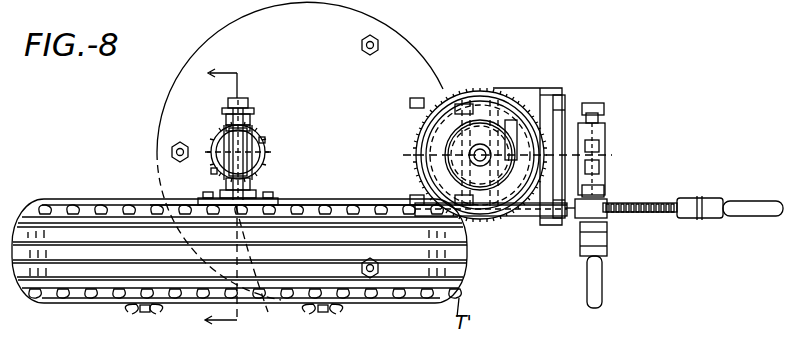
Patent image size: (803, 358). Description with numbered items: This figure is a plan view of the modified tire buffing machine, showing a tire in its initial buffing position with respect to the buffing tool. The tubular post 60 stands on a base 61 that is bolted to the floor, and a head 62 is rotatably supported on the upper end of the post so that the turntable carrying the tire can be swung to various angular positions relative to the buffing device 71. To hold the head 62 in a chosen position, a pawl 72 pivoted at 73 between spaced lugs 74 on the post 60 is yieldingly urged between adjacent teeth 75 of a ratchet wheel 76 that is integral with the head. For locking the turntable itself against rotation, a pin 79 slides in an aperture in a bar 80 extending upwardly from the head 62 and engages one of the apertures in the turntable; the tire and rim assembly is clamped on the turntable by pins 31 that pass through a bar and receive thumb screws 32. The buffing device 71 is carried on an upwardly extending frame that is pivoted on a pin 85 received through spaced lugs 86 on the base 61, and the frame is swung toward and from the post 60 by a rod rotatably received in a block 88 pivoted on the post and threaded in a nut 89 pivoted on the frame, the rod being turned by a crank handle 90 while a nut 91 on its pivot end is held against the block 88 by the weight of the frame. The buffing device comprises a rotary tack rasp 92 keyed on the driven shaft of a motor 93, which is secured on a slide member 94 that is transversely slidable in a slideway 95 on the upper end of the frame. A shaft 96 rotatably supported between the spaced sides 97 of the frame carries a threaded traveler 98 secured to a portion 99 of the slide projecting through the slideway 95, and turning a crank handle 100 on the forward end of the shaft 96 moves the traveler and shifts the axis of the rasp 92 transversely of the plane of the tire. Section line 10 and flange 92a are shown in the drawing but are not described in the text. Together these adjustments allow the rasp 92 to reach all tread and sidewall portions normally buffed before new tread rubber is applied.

The section line 10- 10 is at (207, 199).
The pin 31 is at (324, 313).
The thumb screw 32 is at (340, 311).
The tubular post 60 is at (214, 146).
The base 61 is at (416, 47).
The head 62 is at (262, 166).
The buffing device 71 is at (531, 232).
The pawl 72 is at (240, 99).
The pivot 73 is at (256, 110).
The lug 74 is at (248, 98).
The tooth 75 is at (213, 171).
The ratchet wheel 76 is at (266, 151).
The pin 79 is at (226, 138).
The bar 80 is at (256, 185).
The pin 85 is at (434, 108).
The lug 86 is at (414, 172).
The block 88 is at (268, 310).
The nut 89 is at (583, 225).
The crank handle 90 is at (742, 201).
The nut 91 is at (205, 193).
The rotary tack rasp 92 is at (500, 97).
The drum flange 92a is at (510, 220).
The motor 93 is at (546, 87).
The slide member 94 is at (561, 90).
The slideway 95 is at (606, 130).
The shaft 96 is at (606, 170).
The side 97 is at (605, 191).
The traveler 98 is at (606, 146).
The portion 99 is at (605, 157).
The crank handle 100 is at (603, 288).